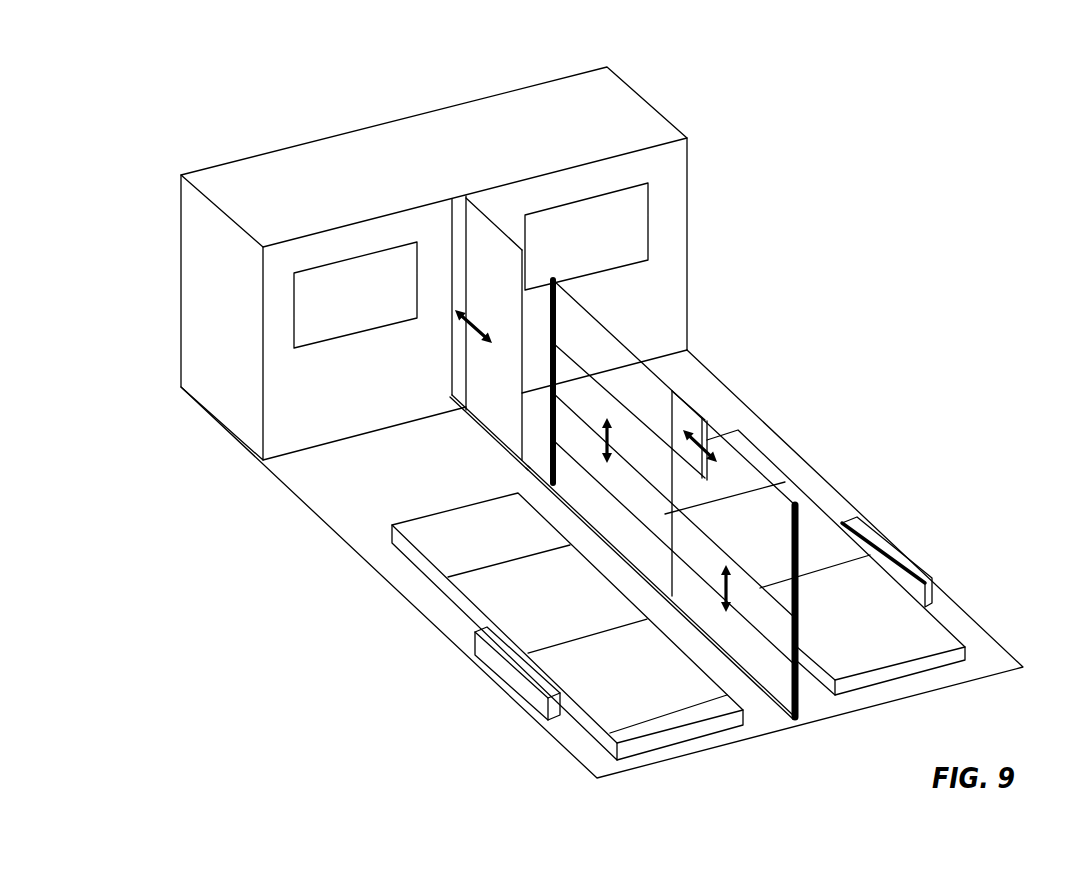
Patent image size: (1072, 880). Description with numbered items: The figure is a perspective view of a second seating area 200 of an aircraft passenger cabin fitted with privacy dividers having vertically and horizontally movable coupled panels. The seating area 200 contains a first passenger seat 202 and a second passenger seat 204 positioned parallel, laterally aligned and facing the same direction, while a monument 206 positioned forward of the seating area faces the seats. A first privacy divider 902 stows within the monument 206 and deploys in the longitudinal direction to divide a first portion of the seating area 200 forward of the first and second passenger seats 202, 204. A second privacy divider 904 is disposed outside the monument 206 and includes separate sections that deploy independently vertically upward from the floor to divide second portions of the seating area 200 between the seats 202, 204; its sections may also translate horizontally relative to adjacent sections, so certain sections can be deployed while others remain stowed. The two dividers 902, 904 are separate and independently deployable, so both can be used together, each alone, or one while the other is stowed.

The second seating area 200 is at (752, 378).
The first passenger seat 202 is at (558, 667).
The second passenger seat 204 is at (885, 605).
The monument 206 is at (607, 113).
The first privacy divider 902 is at (480, 206).
The second privacy divider 904 is at (679, 375).